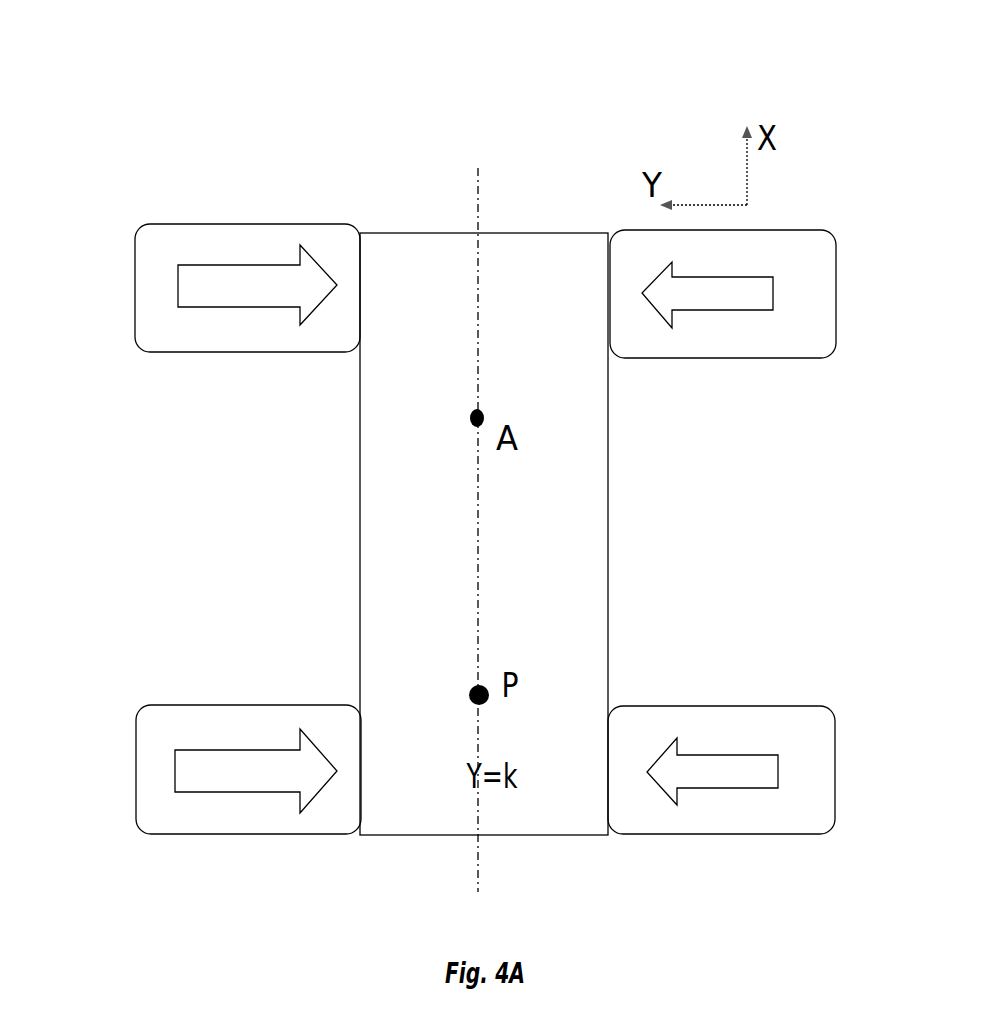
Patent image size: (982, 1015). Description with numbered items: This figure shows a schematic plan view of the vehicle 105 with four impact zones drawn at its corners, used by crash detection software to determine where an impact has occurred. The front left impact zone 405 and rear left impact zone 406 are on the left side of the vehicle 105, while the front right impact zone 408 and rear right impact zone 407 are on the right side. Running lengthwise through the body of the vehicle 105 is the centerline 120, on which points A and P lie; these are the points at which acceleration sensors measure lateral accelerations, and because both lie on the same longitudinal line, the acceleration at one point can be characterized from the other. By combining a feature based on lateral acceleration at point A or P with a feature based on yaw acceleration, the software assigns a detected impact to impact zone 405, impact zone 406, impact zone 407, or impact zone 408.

The vehicle 105 is at (422, 232).
The centerline 120 is at (475, 172).
The impact zone 405 is at (145, 225).
The impact zone 406 is at (203, 705).
The impact zone 407 is at (702, 706).
The impact zone 408 is at (805, 232).